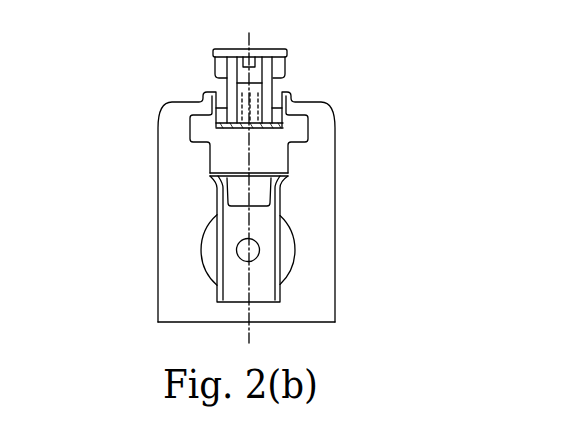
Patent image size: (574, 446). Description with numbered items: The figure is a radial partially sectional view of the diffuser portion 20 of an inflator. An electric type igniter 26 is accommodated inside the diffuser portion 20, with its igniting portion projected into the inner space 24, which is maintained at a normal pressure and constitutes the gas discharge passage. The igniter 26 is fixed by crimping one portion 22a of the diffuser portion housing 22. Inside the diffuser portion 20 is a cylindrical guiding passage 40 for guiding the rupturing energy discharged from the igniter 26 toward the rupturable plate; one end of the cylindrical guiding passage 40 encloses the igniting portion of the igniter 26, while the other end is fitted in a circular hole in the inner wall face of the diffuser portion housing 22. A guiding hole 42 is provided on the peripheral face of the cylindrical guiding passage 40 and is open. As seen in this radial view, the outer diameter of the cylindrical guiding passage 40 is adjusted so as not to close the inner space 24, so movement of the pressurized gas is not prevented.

The diffuser portion 20 is at (261, 193).
The diffuser portion housing 22 is at (173, 200).
The one portion of the diffuser portion housing 22a is at (310, 100).
The inner space 24 is at (287, 250).
The electric type igniter 26 is at (270, 163).
The cylindrical guiding passage 40 is at (283, 287).
The guiding hole 42 is at (236, 251).